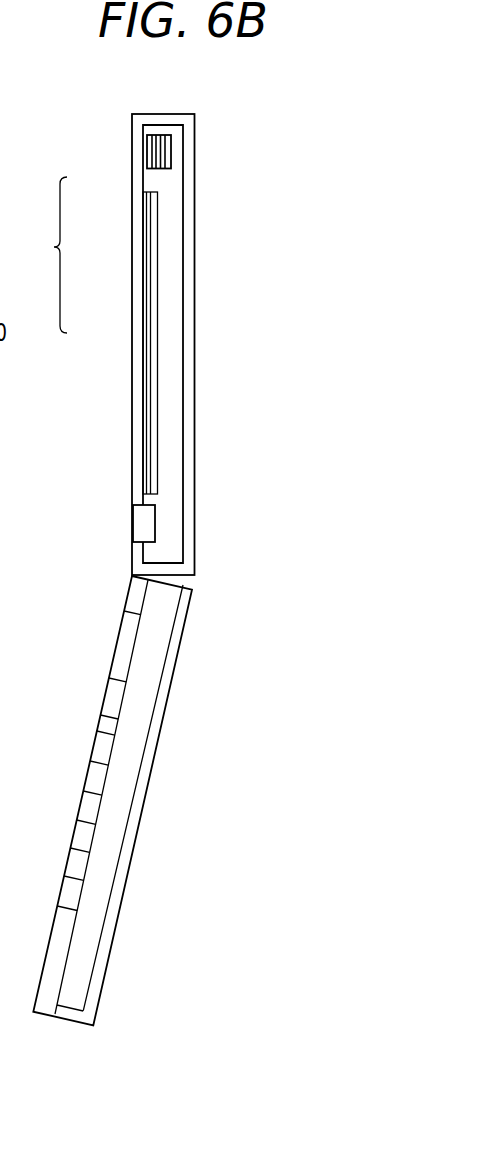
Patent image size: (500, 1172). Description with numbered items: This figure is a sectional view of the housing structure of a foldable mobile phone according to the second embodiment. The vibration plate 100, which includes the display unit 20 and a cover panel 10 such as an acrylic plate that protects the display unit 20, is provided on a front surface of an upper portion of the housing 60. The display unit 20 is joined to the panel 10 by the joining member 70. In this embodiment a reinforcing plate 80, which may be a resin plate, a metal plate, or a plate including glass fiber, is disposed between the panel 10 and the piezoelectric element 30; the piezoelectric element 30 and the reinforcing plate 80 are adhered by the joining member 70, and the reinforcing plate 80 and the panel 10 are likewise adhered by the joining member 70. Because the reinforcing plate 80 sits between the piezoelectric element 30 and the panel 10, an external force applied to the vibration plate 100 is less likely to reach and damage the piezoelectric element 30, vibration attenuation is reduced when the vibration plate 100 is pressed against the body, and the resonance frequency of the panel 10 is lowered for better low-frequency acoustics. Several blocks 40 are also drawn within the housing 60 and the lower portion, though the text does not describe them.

The cover panel 10 is at (132, 190).
The display unit 20 is at (155, 318).
The piezoelectric element 30 is at (167, 148).
The block 40 is at (140, 522).
The housing 60 is at (188, 182).
The joining member 70 is at (160, 135).
The reinforcing plate 80 is at (151, 157).
The vibration plate 100 is at (39, 255).